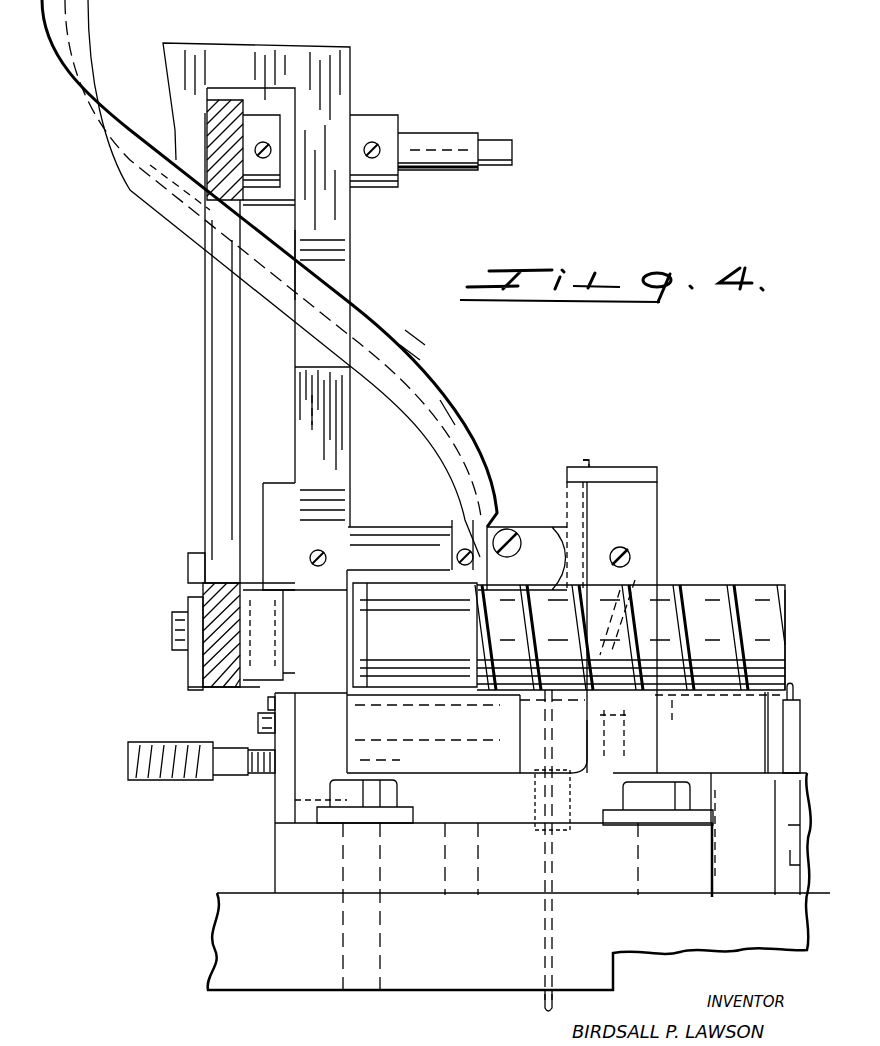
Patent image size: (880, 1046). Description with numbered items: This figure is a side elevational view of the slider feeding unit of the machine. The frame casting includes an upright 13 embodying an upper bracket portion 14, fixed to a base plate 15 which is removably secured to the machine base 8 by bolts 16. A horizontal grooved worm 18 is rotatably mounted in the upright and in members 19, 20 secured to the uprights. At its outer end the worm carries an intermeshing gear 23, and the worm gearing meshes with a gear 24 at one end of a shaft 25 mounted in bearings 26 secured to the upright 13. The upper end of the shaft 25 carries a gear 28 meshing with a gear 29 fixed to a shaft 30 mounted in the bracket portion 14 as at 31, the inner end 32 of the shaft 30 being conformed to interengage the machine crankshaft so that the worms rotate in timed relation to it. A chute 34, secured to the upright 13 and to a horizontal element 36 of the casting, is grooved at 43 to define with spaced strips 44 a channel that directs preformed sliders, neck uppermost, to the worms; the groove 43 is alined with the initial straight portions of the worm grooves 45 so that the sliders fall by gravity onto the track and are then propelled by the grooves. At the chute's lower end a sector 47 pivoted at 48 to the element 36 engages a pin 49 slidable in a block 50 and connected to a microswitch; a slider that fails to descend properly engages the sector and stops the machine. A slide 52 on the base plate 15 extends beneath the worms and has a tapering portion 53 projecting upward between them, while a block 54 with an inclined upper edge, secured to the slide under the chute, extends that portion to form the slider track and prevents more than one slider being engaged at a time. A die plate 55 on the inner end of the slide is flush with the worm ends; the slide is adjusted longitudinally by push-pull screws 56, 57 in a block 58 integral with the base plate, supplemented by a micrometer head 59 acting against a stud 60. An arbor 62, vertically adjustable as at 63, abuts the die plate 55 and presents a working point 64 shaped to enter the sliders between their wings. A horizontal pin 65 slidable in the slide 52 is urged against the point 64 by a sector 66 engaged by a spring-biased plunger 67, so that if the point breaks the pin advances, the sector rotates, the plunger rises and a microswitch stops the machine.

The base 8 is at (237, 917).
The upright 13 is at (337, 456).
The upper bracket portion 14 is at (338, 52).
The base plate 15 is at (275, 851).
The bolts 16 is at (395, 785).
The worm 18 is at (665, 585).
The member 19 is at (645, 505).
The member 20 is at (337, 507).
The gear 23 is at (210, 665).
The gear 24 is at (172, 645).
The shaft 25 is at (212, 417).
The bearings 26 is at (288, 232).
The gear 28 is at (160, 150).
The gear 29 is at (228, 100).
The shaft 30 is at (447, 138).
The mounting of shaft 30 31 is at (352, 125).
The inner end of shaft 30 32 is at (512, 143).
The chute 34 is at (155, 200).
The horizontal element 36 is at (417, 522).
The groove 43 is at (437, 357).
The strips 44 is at (452, 397).
The grooves of the worms 45 is at (680, 587).
The sector 47 is at (530, 527).
The pivot 48 is at (503, 527).
The pin 49 is at (590, 462).
The block 50 is at (645, 470).
The slide 52 is at (520, 740).
The tapering portion 53 is at (650, 555).
The block 54 is at (480, 650).
The die plate 55 is at (787, 647).
The push-pull screw 56 is at (268, 703).
The push-pull screw 57 is at (258, 723).
The block 58 is at (283, 795).
The micrometer head 59 is at (213, 780).
The stud 60 is at (290, 810).
The arbor 62 is at (788, 728).
The vertical adjustment 63 is at (773, 867).
The working point 64 is at (791, 687).
The horizontal pin 65 is at (672, 683).
The sector 66 is at (609, 728).
The plunger 67 is at (540, 1003).